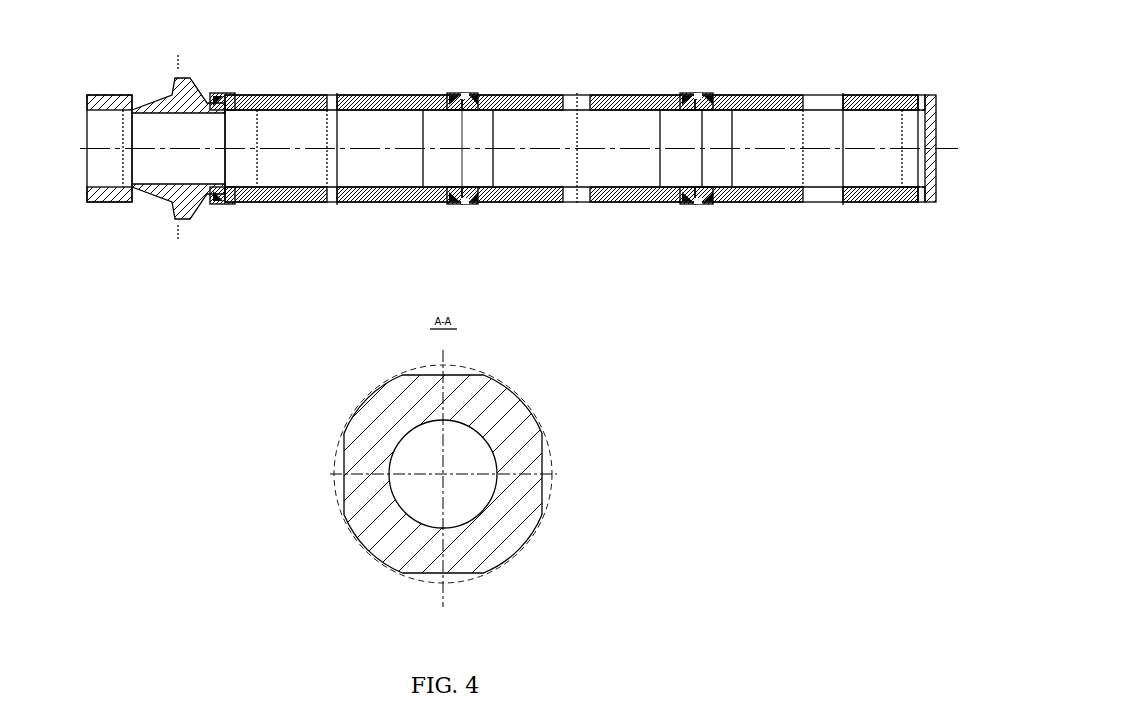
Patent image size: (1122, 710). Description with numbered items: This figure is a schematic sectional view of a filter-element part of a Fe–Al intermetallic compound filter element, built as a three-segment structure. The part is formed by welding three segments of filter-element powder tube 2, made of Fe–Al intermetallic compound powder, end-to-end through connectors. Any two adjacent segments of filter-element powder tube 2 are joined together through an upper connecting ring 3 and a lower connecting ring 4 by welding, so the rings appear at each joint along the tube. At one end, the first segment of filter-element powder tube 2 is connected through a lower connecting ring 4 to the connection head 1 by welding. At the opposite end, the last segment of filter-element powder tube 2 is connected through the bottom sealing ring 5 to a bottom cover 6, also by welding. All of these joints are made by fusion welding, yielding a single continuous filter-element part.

The connection head 1 is at (130, 97).
The filter-element powder tube 2 is at (337, 93).
The upper connecting ring 3 is at (445, 97).
The lower connecting ring 4 is at (237, 97).
The bottom sealing ring 5 is at (922, 93).
The bottom cover 6 is at (933, 110).